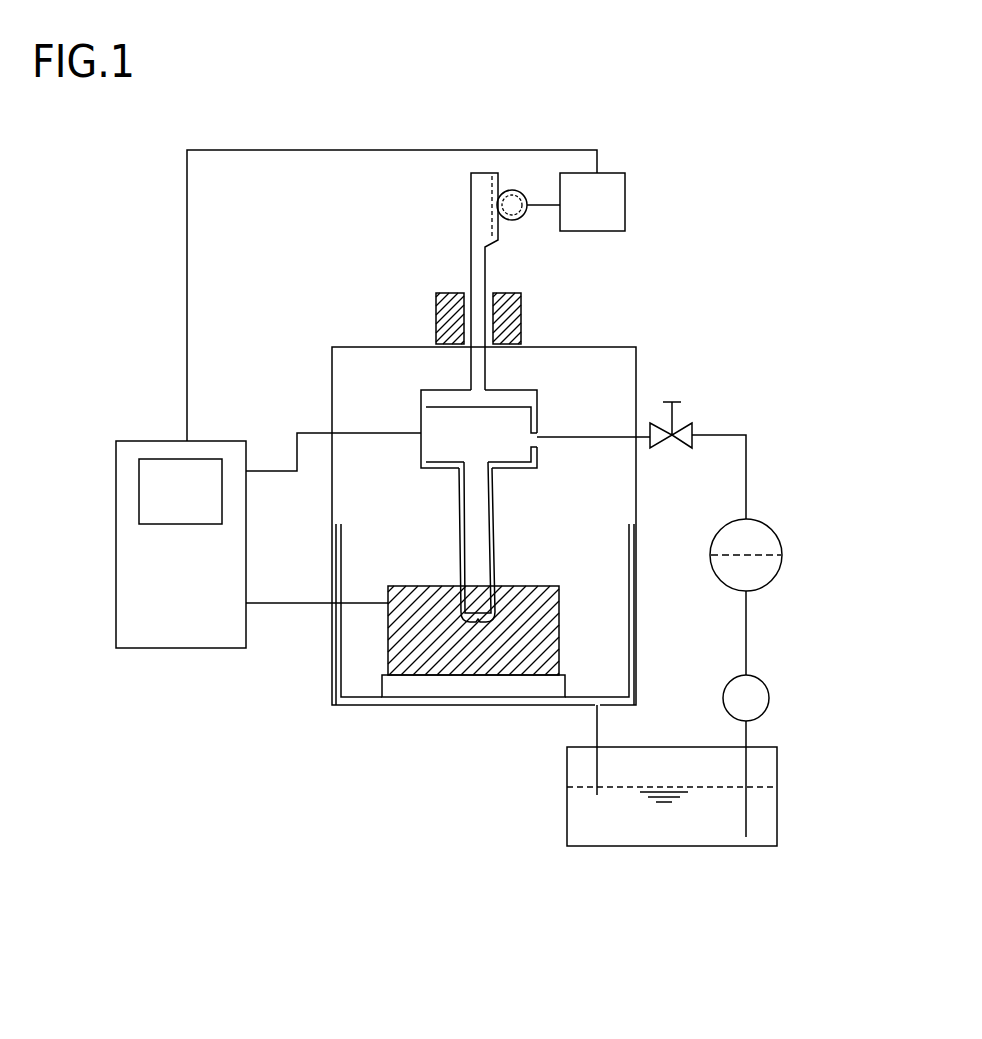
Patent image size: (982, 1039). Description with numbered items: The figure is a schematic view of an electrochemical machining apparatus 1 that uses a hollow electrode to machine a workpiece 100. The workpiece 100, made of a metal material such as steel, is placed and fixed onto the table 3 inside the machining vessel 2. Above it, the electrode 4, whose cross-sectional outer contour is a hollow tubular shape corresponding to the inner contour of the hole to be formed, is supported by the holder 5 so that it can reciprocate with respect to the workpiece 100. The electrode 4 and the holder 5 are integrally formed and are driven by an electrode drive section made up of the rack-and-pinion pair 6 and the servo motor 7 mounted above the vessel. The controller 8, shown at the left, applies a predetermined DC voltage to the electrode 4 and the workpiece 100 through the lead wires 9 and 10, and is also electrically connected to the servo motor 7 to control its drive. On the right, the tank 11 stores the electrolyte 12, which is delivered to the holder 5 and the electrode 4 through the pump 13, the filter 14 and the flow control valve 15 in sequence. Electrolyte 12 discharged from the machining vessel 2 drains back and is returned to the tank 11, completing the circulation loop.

The electrochemical machining apparatus 1 is at (722, 208).
The machining vessel 2 is at (333, 680).
The table 3 is at (508, 688).
The electrode 4 is at (493, 550).
The holder 5 is at (536, 415).
The rack-and-pinion pair 6 is at (520, 191).
The servo motor 7 is at (617, 207).
The controller 8 is at (197, 648).
The lead wire 9 is at (265, 470).
The lead wire 10 is at (295, 603).
The tank 11 is at (771, 760).
The electrolyte 12 is at (663, 840).
The pump 13 is at (756, 688).
The filter 14 is at (765, 535).
The flow control valve 15 is at (691, 424).
The workpiece 100 is at (425, 660).